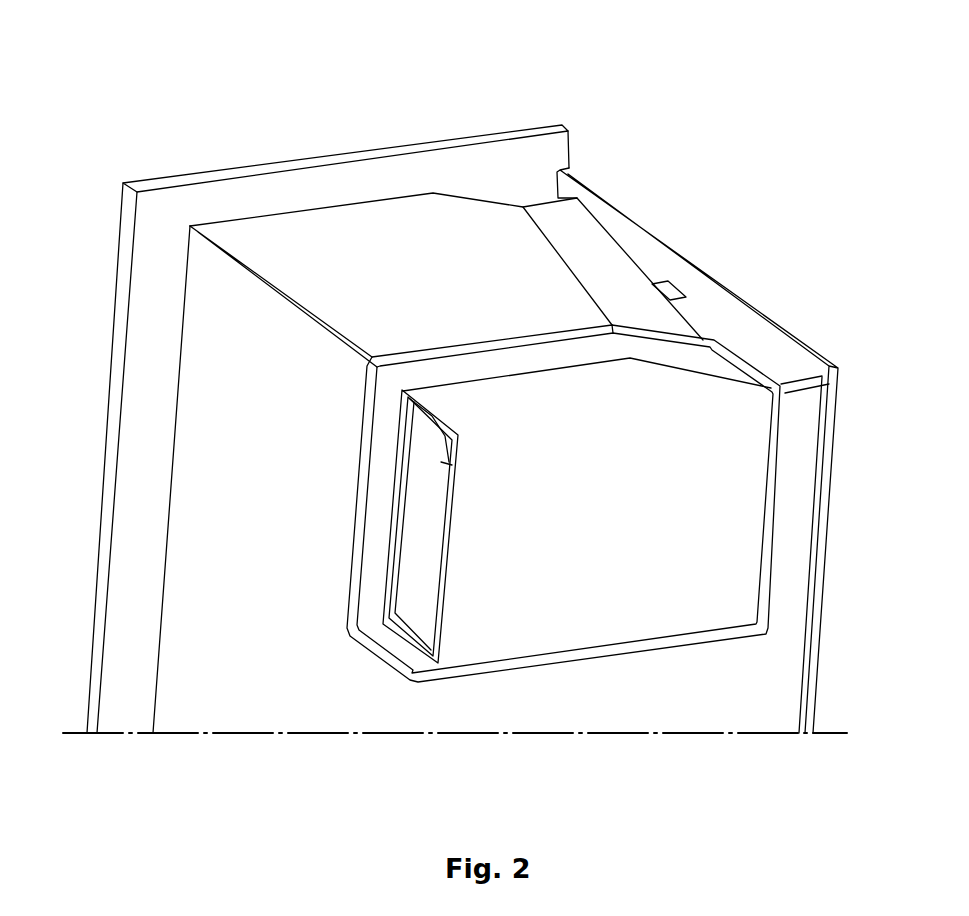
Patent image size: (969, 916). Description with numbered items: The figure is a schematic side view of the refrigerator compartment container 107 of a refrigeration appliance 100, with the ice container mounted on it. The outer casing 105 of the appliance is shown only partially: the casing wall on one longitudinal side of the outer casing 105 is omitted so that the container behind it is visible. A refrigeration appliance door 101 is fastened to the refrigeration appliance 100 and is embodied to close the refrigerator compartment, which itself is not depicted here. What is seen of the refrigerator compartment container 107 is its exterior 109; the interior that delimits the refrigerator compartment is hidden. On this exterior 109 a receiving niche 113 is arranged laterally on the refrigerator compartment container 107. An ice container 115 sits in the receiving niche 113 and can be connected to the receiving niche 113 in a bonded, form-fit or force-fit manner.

The refrigeration appliance 100 is at (340, 104).
The refrigeration appliance door 101 is at (677, 250).
The outer casing 105 is at (213, 193).
The refrigerator compartment container 107 is at (243, 225).
The exterior 109 is at (374, 269).
The receiving niche 113 is at (410, 652).
The ice container 115 is at (630, 604).